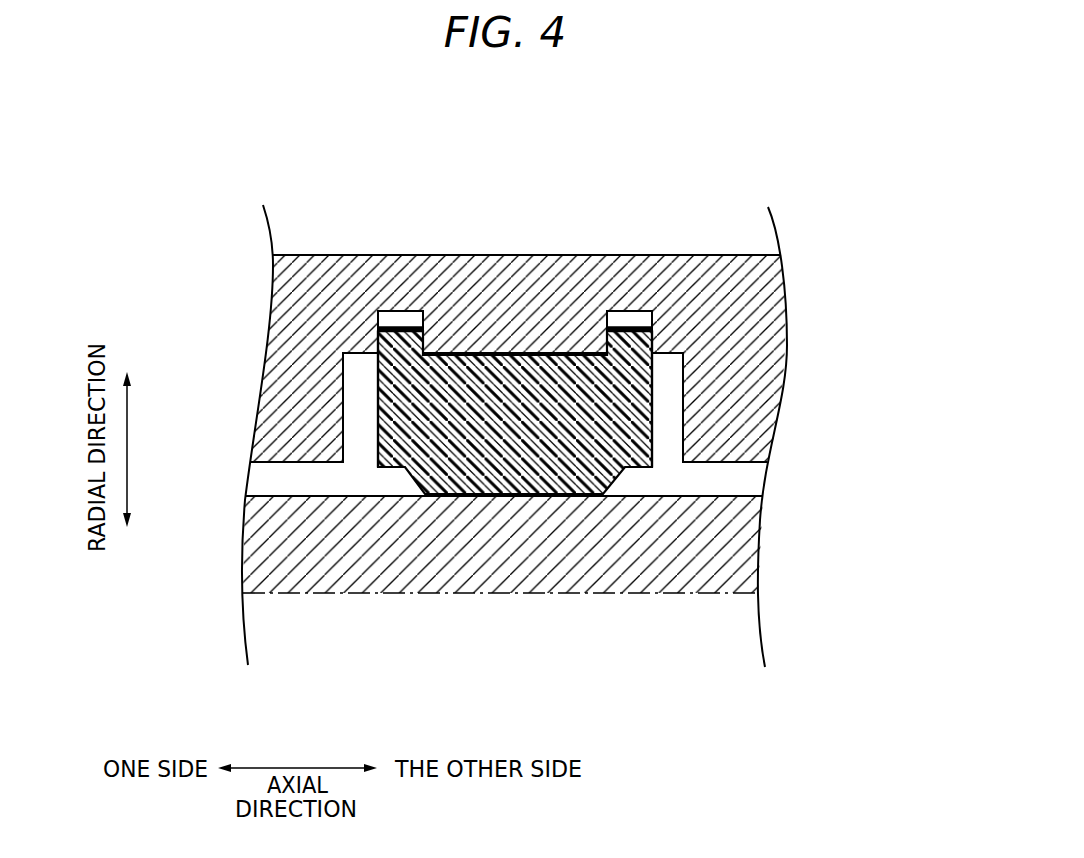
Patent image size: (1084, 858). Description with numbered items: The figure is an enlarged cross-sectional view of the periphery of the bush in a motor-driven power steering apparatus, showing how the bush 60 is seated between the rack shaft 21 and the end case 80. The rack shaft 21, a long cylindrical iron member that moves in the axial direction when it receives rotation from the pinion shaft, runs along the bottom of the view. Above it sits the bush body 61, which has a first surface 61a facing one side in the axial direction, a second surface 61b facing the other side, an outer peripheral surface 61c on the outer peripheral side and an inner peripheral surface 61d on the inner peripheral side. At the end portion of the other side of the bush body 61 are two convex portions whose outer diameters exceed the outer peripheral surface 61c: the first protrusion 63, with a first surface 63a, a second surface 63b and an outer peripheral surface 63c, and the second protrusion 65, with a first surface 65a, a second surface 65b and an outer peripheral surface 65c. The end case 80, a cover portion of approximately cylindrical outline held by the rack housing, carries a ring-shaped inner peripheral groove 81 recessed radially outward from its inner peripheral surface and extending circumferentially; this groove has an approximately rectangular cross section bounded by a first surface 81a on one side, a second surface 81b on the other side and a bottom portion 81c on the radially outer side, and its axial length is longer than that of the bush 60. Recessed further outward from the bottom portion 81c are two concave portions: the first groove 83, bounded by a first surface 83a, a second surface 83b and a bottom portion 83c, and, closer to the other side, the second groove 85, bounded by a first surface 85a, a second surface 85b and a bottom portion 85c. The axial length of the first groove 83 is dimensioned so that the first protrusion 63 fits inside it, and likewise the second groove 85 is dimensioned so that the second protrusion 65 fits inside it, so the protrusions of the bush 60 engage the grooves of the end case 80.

The rack shaft 21 is at (740, 516).
The bush 60 is at (533, 426).
The bush body 61 is at (508, 447).
The first surface 61a is at (377, 433).
The second surface 61b is at (652, 453).
The outer peripheral surface 61c is at (504, 352).
The inner peripheral surface 61d is at (487, 497).
The first protrusion 63 is at (375, 235).
The first surface 63a is at (377, 337).
The second surface 63b is at (424, 325).
The outer peripheral surface 63c is at (378, 314).
The second protrusion 65 is at (648, 235).
The first surface 65a is at (607, 342).
The second surface 65b is at (655, 335).
The outer peripheral surface 65c is at (652, 320).
The end case 80 is at (771, 266).
The inner peripheral groove 81 is at (508, 399).
The first surface 81a is at (343, 450).
The second surface 81b is at (684, 422).
The bottom portion 81c is at (527, 357).
The first groove 83 is at (336, 426).
The first surface 83a is at (390, 355).
The second surface 83b is at (420, 363).
The bottom portion 83c is at (403, 314).
The second groove 85 is at (710, 426).
The first surface 85a is at (608, 315).
The second surface 85b is at (655, 367).
The bottom portion 85c is at (634, 312).